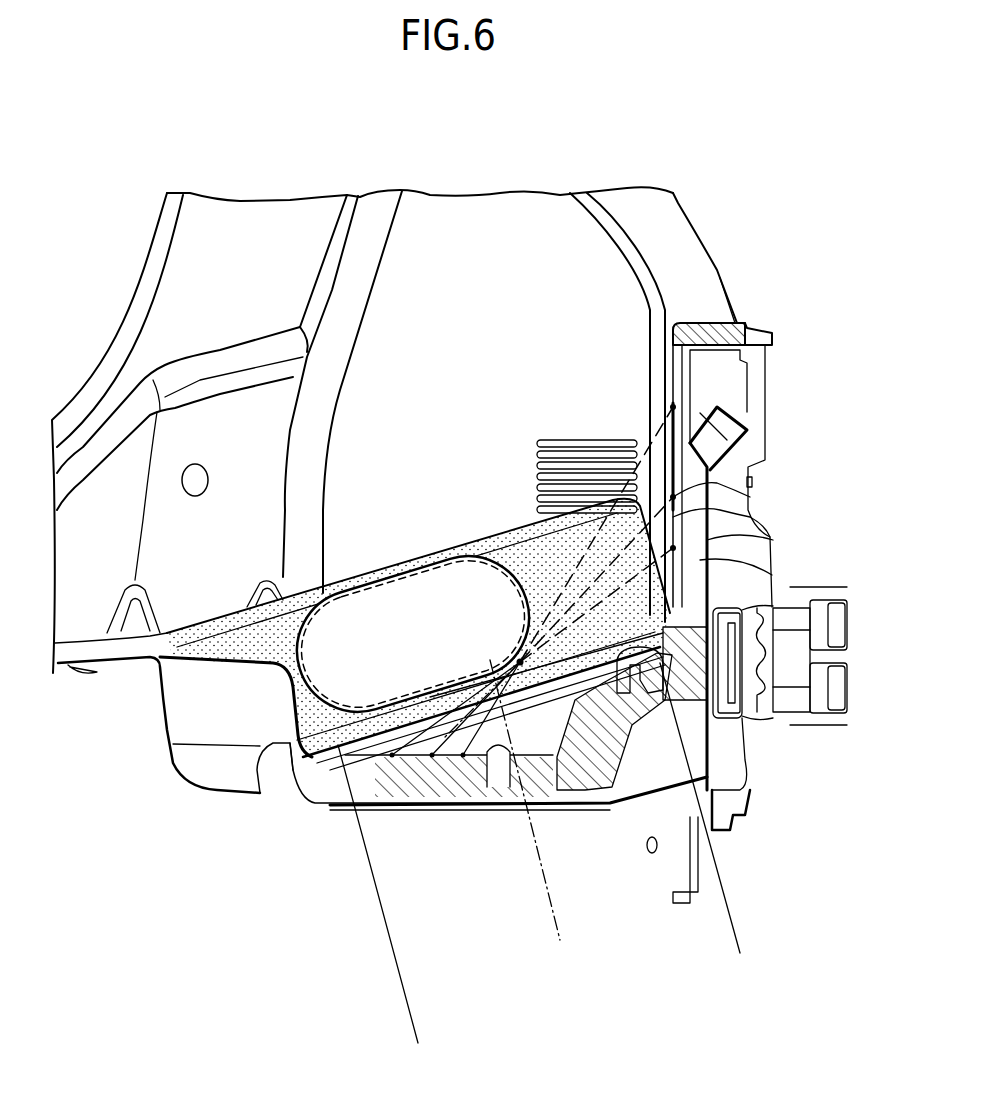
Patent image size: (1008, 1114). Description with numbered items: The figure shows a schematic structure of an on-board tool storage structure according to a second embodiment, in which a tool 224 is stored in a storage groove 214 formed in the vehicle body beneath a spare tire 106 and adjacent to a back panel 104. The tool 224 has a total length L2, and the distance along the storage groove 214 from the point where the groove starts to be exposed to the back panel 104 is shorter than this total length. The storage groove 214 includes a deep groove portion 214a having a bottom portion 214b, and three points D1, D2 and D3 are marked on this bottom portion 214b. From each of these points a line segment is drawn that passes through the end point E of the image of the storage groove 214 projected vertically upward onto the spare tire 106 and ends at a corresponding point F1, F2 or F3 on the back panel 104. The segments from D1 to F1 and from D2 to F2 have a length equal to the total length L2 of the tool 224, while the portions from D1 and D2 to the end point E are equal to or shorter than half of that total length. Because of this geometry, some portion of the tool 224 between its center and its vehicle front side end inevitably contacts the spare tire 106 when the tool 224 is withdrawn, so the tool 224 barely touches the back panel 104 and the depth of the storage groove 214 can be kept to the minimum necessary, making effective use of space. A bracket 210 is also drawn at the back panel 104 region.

The back panel 104 is at (673, 243).
The spare tire 106 is at (370, 575).
The tool 224 is at (556, 635).
The end point of the projected image of the storage groove E is at (518, 662).
The storage groove 214 is at (510, 663).
The deep groove portion 214a is at (552, 745).
The bottom portion 214b is at (490, 770).
The rear bracket 210 is at (618, 762).
The point F1 on the back panel F1 is at (673, 548).
The point F2 on the back panel F2 is at (672, 497).
The point F3 on the back panel F3 is at (672, 407).
The point D1 on the bottom portion D1 is at (392, 760).
The point D2 on the bottom portion D2 is at (432, 760).
The point D3 on the bottom portion D3 is at (463, 760).
The total length of the tool L2 is at (738, 947).